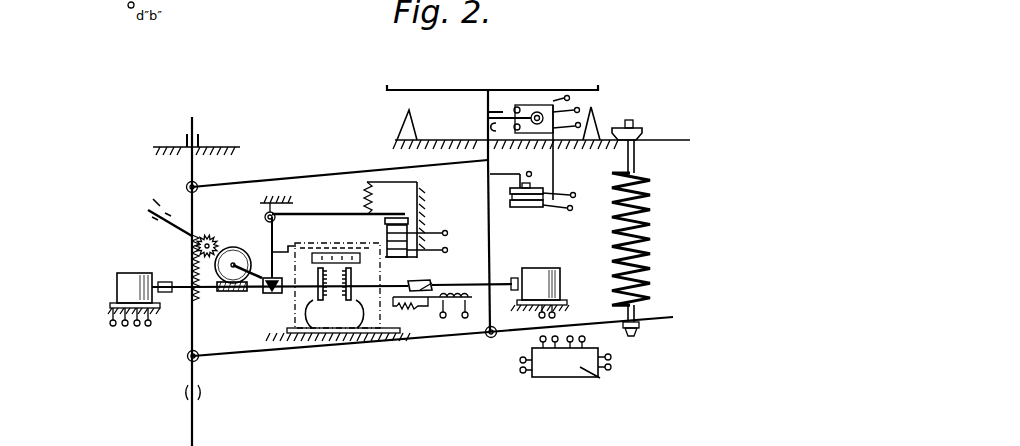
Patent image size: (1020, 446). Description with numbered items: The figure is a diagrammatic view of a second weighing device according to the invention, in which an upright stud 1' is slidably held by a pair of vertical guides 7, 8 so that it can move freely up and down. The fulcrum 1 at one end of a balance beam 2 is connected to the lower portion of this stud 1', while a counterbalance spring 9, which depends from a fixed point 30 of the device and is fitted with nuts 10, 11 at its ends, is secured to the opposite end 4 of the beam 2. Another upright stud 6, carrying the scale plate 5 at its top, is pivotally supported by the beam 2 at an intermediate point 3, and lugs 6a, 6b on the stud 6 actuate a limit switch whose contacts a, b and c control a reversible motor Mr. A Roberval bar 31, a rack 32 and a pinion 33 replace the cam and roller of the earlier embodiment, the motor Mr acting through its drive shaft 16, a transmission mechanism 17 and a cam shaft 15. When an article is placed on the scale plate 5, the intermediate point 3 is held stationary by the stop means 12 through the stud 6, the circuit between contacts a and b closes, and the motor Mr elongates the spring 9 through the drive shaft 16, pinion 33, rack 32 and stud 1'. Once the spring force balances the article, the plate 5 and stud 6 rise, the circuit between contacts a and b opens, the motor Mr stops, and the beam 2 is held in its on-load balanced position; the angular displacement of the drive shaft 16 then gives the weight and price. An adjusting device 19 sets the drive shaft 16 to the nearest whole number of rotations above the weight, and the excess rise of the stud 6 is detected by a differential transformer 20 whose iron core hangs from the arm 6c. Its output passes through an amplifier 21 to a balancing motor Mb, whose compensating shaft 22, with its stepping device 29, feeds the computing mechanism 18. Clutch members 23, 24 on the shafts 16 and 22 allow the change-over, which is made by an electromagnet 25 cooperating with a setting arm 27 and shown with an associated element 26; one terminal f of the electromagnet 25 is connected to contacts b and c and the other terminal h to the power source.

The fulcrum 1 is at (208, 281).
The upright stud 1' is at (165, 371).
The balance beam 2 is at (272, 351).
The intermediate point 3 is at (491, 338).
The opposite end 4 is at (658, 320).
The scale plate 5 is at (487, 90).
The upright stud 6 is at (492, 249).
The lug 6a is at (494, 108).
The lug 6b is at (487, 122).
The arm 6c is at (503, 246).
The vertical guide 7 is at (185, 392).
The vertical guide 8 is at (187, 140).
The counterbalance spring 9 is at (652, 237).
The nut 10 is at (627, 336).
The nut 11 is at (633, 120).
The stop means 12 is at (393, 132).
The cam shaft 15 is at (170, 233).
The drive shaft 16 is at (224, 291).
The transmission mechanism 17 is at (238, 351).
The computing mechanism 18 is at (370, 320).
The adjusting device 19 is at (280, 320).
The differential transformer 20 is at (593, 187).
The amplifier 21 is at (552, 378).
The compensating shaft 22 is at (480, 282).
The clutch member 23 is at (310, 313).
The clutch member 24 is at (355, 318).
The electromagnet 25 is at (412, 220).
The spring 26 is at (368, 198).
The setting arm 27 is at (280, 250).
The stepping device 29 is at (425, 307).
The fixed point 30 is at (645, 138).
The Roberval bar 31 is at (261, 181).
The rack 32 is at (195, 232).
The pinion 33 is at (217, 242).
The reversible motor Mr is at (128, 277).
The balancing motor Mb is at (548, 270).
The contact a is at (535, 113).
The contact b is at (522, 169).
The contact c is at (519, 106).
The terminal f is at (432, 231).
The terminal h is at (434, 252).